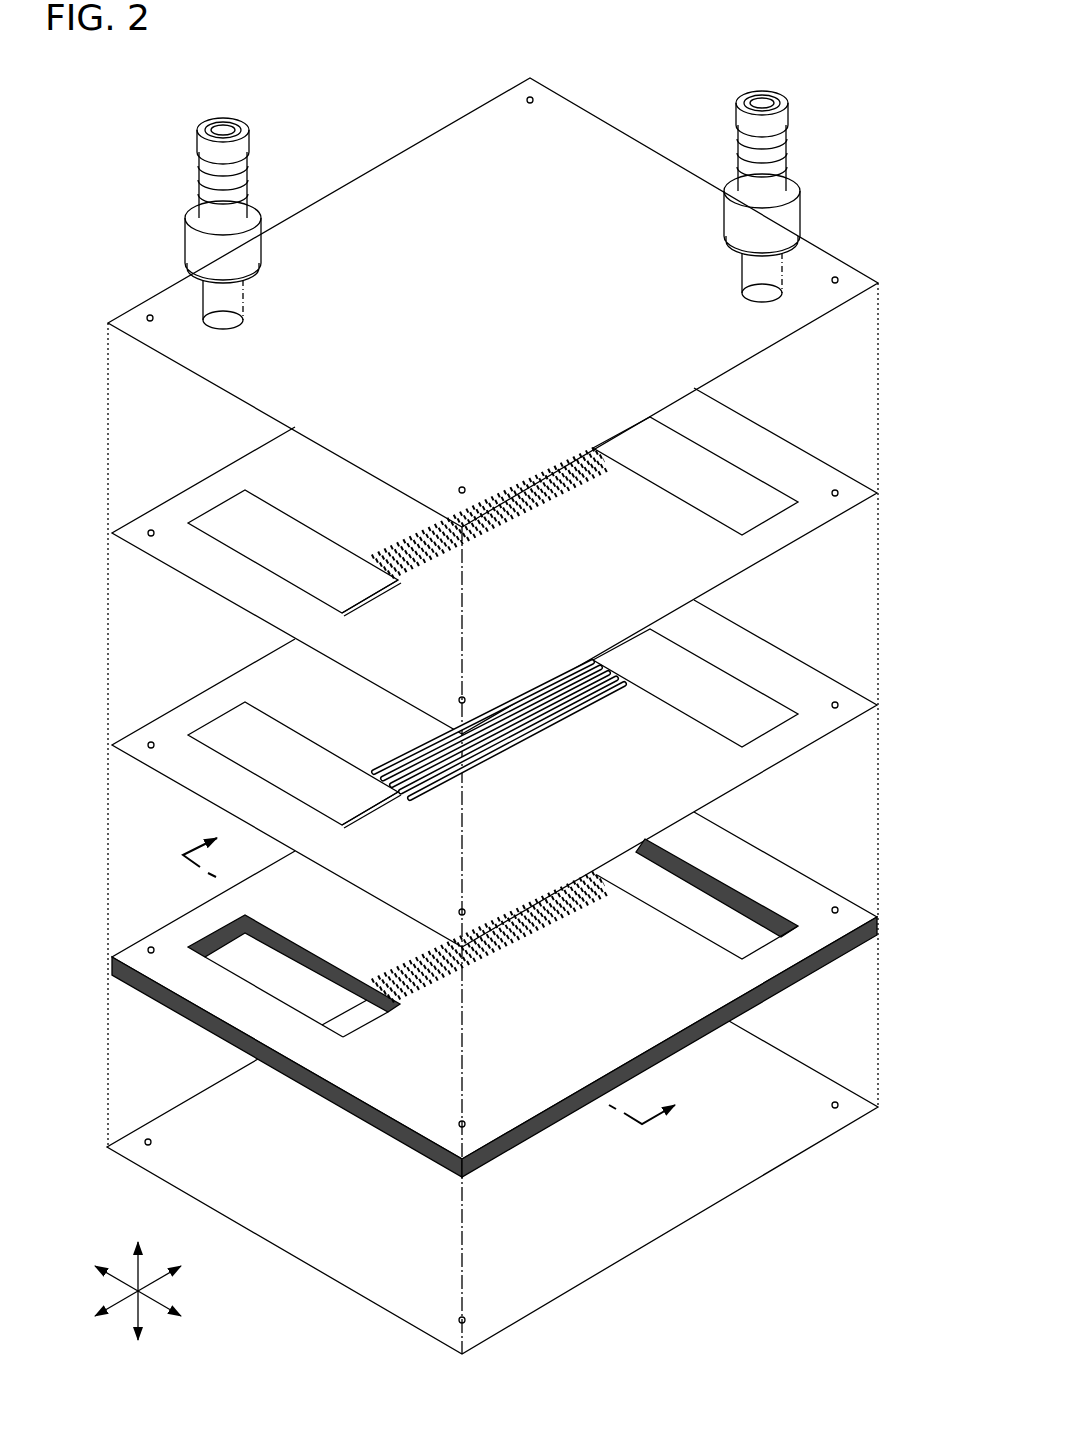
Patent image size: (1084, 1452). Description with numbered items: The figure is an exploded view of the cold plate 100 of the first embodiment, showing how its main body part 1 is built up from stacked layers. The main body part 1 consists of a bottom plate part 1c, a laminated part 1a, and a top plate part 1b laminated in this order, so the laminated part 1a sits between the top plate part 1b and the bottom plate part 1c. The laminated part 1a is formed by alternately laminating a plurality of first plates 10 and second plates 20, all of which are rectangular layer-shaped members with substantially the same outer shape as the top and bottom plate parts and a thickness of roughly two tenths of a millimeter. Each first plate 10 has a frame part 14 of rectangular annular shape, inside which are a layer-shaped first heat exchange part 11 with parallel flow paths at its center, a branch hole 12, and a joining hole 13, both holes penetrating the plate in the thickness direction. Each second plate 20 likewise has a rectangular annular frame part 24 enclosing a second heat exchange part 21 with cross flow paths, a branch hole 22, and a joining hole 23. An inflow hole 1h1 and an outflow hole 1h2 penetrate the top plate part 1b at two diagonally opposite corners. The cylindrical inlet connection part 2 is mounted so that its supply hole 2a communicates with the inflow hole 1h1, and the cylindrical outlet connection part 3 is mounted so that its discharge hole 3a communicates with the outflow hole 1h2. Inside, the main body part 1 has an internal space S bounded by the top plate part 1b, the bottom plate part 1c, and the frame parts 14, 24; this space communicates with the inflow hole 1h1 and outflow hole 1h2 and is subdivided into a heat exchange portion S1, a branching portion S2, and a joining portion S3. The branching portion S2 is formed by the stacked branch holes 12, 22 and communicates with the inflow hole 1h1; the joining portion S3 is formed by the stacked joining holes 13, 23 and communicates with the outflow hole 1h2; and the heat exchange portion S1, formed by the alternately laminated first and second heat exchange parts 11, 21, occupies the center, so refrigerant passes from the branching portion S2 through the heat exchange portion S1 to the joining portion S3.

The cold plate 100 is at (97, 178).
The main body part 1 is at (86, 410).
The laminated part 1a is at (914, 532).
The top plate part 1b is at (613, 157).
The bottom plate part 1c is at (740, 1142).
The inflow hole 1h1 is at (217, 300).
The outflow hole 1h2 is at (772, 290).
The inlet connection part 2 is at (194, 167).
The supply hole 2a is at (232, 109).
The outlet connection part 3 is at (793, 166).
The discharge hole 3a is at (792, 91).
The first plate 10 is at (854, 710).
The first heat exchange part 11 is at (508, 743).
The branch hole 12 is at (380, 810).
The joining hole 13 is at (722, 721).
The frame part 14 is at (257, 680).
The second plate 20 is at (856, 500).
The second heat exchange part 21 is at (508, 531).
The branch hole 22 is at (380, 598).
The joining hole 23 is at (722, 509).
The frame part 24 is at (257, 468).
The internal space S is at (707, 1017).
The heat exchange portion S1 is at (508, 955).
The branching portion S2 is at (380, 1022).
The joining portion S3 is at (722, 933).